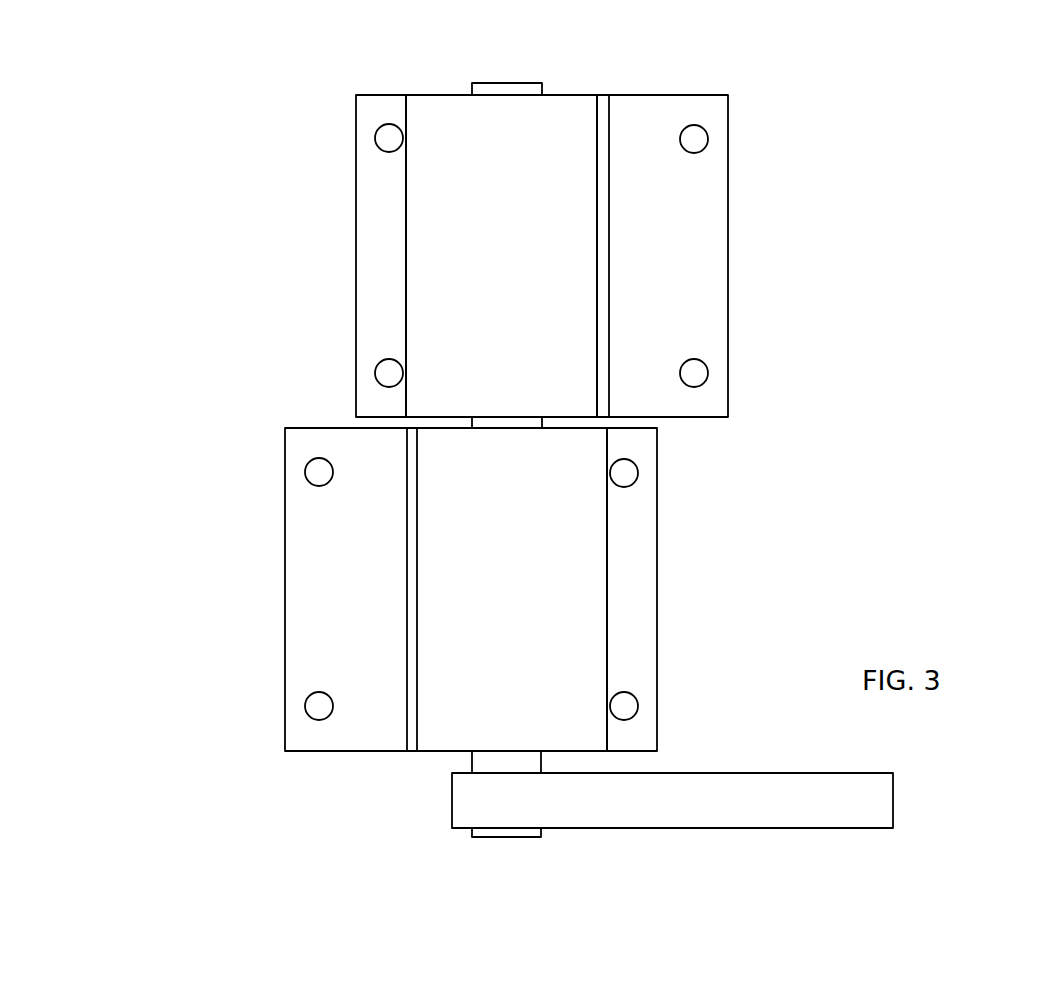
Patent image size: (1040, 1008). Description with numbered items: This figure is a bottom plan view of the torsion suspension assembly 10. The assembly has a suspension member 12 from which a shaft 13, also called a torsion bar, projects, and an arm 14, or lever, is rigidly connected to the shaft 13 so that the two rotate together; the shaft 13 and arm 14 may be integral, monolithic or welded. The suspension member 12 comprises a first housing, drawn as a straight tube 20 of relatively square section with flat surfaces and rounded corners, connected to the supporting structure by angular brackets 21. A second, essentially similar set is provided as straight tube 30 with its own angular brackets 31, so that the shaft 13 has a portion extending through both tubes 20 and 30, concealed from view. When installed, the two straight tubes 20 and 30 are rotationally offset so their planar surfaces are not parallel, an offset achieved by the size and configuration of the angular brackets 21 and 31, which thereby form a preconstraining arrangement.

The torsion suspension assembly 10 is at (944, 287).
The suspension member 12 is at (276, 335).
The shaft 13 is at (510, 85).
The arm 14 is at (628, 816).
The straight tube 20 is at (505, 609).
The angular brackets 21 is at (345, 624).
The straight tube 30 is at (515, 250).
The angular brackets 31 is at (388, 278).